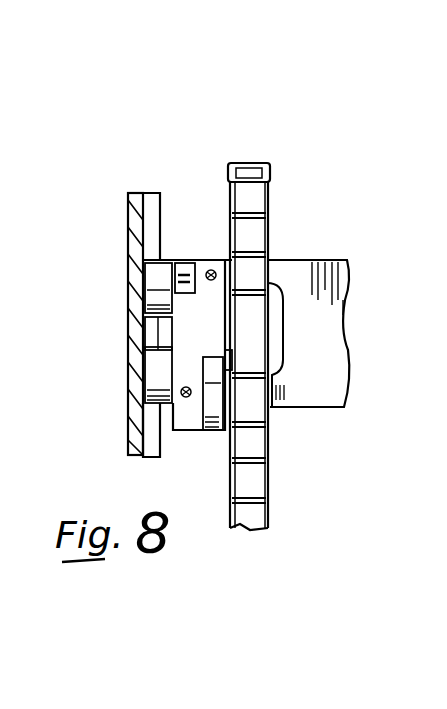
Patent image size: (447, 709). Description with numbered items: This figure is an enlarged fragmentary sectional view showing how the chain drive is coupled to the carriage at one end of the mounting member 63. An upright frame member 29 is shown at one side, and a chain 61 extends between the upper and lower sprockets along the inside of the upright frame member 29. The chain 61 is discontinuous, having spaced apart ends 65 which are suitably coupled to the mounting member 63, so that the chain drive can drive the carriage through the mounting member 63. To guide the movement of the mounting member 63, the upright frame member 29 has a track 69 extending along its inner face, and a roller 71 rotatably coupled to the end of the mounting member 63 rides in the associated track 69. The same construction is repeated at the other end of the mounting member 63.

The upright frame member 29 is at (133, 195).
The chain 61 is at (248, 163).
The mounting member 63 is at (308, 278).
The spaced apart ends 65 is at (285, 358).
The track 69 is at (152, 210).
The roller 71 is at (157, 365).